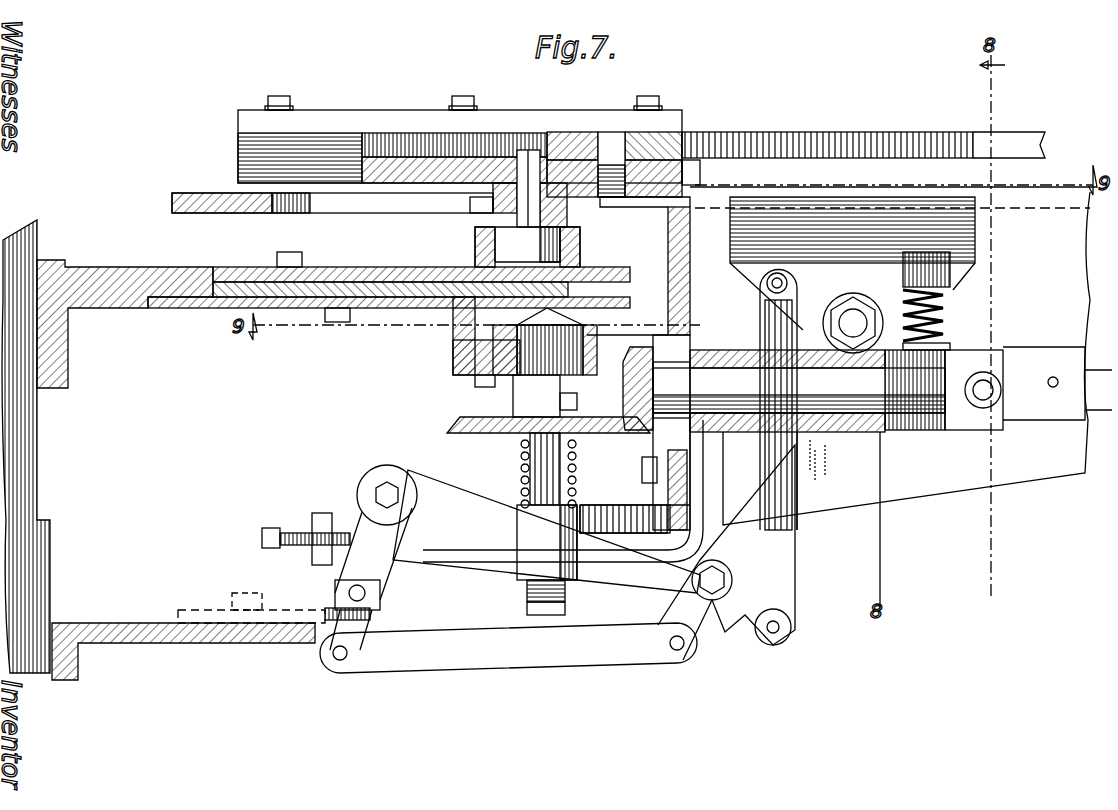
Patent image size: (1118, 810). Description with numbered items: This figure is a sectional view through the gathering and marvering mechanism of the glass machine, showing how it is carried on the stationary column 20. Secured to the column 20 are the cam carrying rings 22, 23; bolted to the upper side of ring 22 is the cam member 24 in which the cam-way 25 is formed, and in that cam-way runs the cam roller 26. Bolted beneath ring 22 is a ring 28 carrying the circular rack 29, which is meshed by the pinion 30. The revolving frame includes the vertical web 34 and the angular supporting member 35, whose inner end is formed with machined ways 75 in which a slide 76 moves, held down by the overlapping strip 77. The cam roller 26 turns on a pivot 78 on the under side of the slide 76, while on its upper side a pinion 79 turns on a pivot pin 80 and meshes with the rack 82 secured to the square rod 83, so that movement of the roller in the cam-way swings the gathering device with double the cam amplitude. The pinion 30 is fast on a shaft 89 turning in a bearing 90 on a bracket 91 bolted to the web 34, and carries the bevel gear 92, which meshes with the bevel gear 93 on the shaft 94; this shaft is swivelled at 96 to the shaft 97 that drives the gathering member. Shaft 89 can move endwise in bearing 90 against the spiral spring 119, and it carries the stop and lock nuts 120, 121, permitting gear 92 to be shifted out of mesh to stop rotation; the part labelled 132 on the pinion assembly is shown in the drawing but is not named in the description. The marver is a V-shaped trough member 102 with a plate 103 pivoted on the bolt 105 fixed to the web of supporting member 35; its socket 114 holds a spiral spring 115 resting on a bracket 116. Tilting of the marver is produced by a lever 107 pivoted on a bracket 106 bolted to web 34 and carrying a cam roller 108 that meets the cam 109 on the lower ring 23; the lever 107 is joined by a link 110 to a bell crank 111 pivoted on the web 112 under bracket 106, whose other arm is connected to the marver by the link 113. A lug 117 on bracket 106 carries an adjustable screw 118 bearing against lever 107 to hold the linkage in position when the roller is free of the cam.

The stationary column 20 is at (37, 470).
The cam carrying ring 22 is at (118, 298).
The cam carrying ring 23 is at (122, 630).
The cam member 24 is at (372, 275).
The cam-way 25 is at (580, 250).
The cam roller 26 is at (510, 252).
The ring 28 is at (400, 310).
The circular rack 29 is at (453, 372).
The pinion 30 is at (530, 395).
The vertical web 34 is at (705, 210).
The supporting member 35 is at (1060, 465).
The machined ways 75 is at (262, 168).
The slide 76 is at (405, 158).
The overlapping strip 77 is at (505, 118).
The pivot 78 is at (526, 170).
The pinion 79 is at (672, 140).
The pivot pin 80 is at (610, 140).
The rack 82 is at (770, 145).
The rod 83 is at (1020, 145).
The shaft 89 is at (530, 445).
The bearing 90 is at (575, 508).
The bracket 91 is at (640, 540).
The bevel gear 92 is at (470, 435).
The bevel gear 93 is at (623, 380).
The shaft 94 is at (880, 413).
The swivel 96 is at (983, 408).
The shaft 97 is at (1072, 347).
The marver member 102 is at (825, 225).
The plate 103 is at (800, 292).
The bolt 105 is at (850, 336).
The bracket 106 is at (465, 512).
The lever 107 is at (357, 500).
The cam roller 108 is at (372, 615).
The cam 109 is at (232, 605).
The link 110 is at (545, 655).
The bell crank 111 is at (700, 615).
The web 112 is at (652, 580).
The link 113 is at (785, 478).
The socket 114 is at (925, 252).
The spiral spring 115 is at (945, 312).
The bracket 116 is at (950, 346).
The lug 117 is at (320, 555).
The adjustable screw 118 is at (272, 532).
The spiral spring 119 is at (578, 462).
The stop nut 120 is at (527, 590).
The lock nut 121 is at (527, 610).
The nut 132 is at (575, 325).